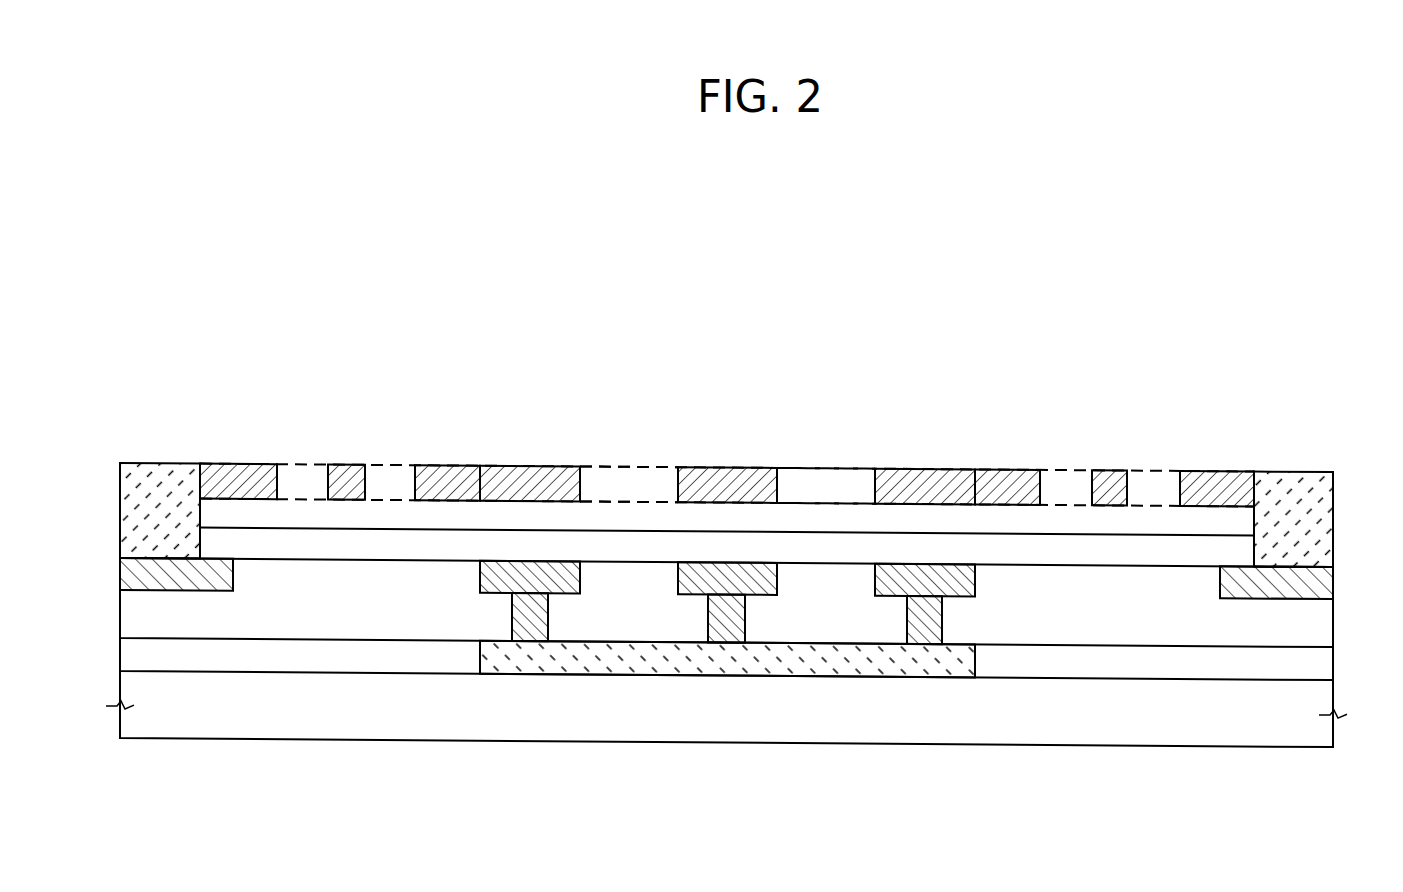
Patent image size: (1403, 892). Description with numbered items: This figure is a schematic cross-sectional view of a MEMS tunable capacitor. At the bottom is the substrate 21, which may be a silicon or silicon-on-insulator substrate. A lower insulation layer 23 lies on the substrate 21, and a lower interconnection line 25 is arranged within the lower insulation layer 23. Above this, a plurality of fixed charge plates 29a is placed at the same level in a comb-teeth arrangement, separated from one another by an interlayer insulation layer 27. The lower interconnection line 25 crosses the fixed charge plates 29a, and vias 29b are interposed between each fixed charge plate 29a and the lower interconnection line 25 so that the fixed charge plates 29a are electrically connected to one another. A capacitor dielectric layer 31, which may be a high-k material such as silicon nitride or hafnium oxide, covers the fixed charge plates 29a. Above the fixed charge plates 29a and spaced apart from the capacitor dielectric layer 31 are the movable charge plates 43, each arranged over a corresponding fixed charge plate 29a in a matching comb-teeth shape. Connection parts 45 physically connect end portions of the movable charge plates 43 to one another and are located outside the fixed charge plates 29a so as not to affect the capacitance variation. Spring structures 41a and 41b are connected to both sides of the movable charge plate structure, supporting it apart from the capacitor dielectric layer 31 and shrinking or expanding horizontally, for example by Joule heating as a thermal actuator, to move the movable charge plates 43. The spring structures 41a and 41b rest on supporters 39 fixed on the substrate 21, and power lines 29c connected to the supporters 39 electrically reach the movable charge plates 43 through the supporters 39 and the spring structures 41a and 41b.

The substrate 21 is at (1325, 696).
The lower insulation layer 23 is at (125, 656).
The lower interconnection line 25 is at (755, 664).
The interlayer insulation layer 27 is at (125, 622).
The fixed charge plates 29a is at (580, 574).
The vias 29b is at (533, 609).
The power lines 29c is at (124, 580).
The capacitor dielectric layer 31 is at (1237, 544).
The supporters 39 is at (125, 505).
The spring structure 41a is at (433, 463).
The spring structure 41b is at (1200, 463).
The movable charge plates 43 is at (535, 463).
The connection part 45 is at (645, 473).